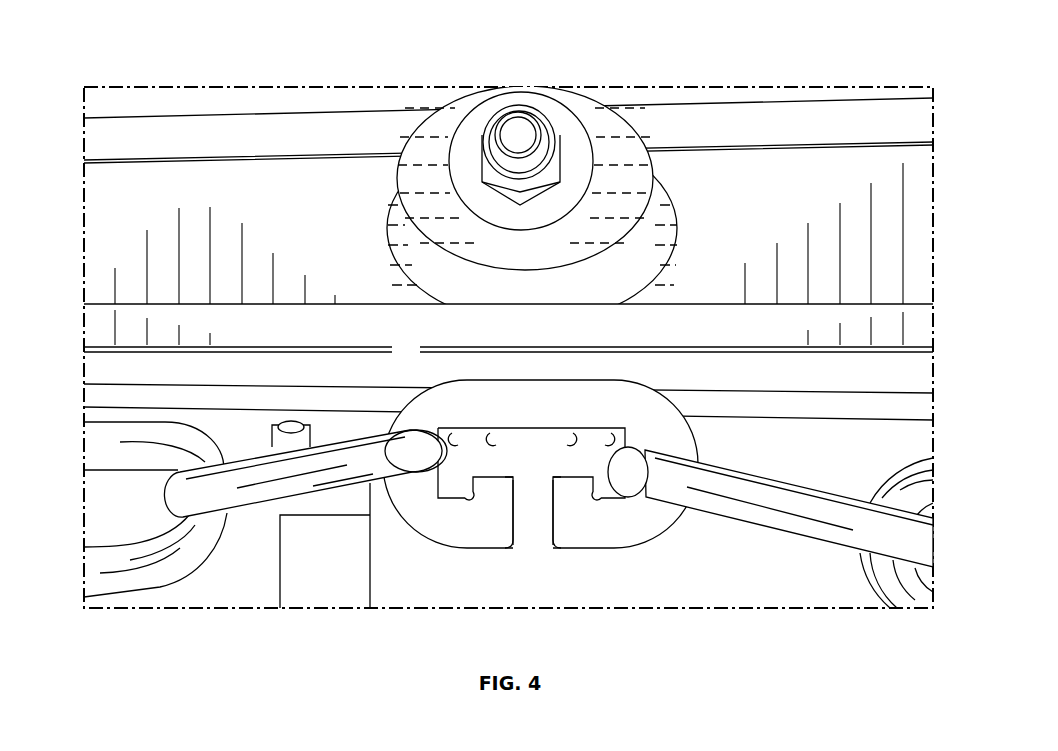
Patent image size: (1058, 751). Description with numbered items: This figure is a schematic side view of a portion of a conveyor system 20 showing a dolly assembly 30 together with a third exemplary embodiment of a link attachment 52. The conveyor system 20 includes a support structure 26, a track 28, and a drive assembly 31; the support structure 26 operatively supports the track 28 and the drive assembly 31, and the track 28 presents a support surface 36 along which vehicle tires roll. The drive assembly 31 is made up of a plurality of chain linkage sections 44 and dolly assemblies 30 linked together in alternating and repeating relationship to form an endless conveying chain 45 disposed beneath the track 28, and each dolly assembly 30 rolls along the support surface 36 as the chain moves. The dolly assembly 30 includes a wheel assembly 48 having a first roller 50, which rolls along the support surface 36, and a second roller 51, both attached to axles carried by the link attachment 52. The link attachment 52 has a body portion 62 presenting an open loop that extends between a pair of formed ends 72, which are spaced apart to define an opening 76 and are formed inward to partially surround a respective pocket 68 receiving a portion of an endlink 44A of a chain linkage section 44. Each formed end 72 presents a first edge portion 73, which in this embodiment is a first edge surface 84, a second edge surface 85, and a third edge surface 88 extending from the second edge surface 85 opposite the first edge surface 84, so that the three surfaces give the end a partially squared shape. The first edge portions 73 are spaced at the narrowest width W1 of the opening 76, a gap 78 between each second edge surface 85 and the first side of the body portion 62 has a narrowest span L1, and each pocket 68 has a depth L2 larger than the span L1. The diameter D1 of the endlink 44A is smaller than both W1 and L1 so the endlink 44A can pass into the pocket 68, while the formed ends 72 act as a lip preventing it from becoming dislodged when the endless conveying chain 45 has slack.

The conveyor system 20 is at (113, 58).
The support structure 26 is at (255, 590).
The track 28 is at (105, 320).
The dolly assembly 30 is at (438, 100).
The drive assembly 31 is at (620, 569).
The support surface 36 is at (922, 292).
The chain linkage section 44 is at (105, 593).
The endlink 44A is at (370, 497).
The endless conveying chain 45 is at (133, 582).
The wheel assembly 48 is at (657, 127).
The first roller 50 is at (633, 102).
The second roller 51 is at (662, 252).
The link attachment 52 is at (625, 540).
The body portion 62 is at (668, 517).
The pocket 68 is at (432, 413).
The formed end 72 is at (492, 522).
The first edge portion 73 is at (556, 495).
The opening 76 is at (533, 543).
The gap 78 is at (505, 442).
The first edge surface 84 is at (513, 477).
The second edge surface 85 is at (470, 488).
The third edge surface 88 is at (470, 503).
The diameter of the endlink D1 is at (395, 393).
The narrowest span of the gap L1 is at (497, 466).
The depth of the pocket L2 is at (459, 487).
The narrowest width of the opening W1 is at (516, 510).